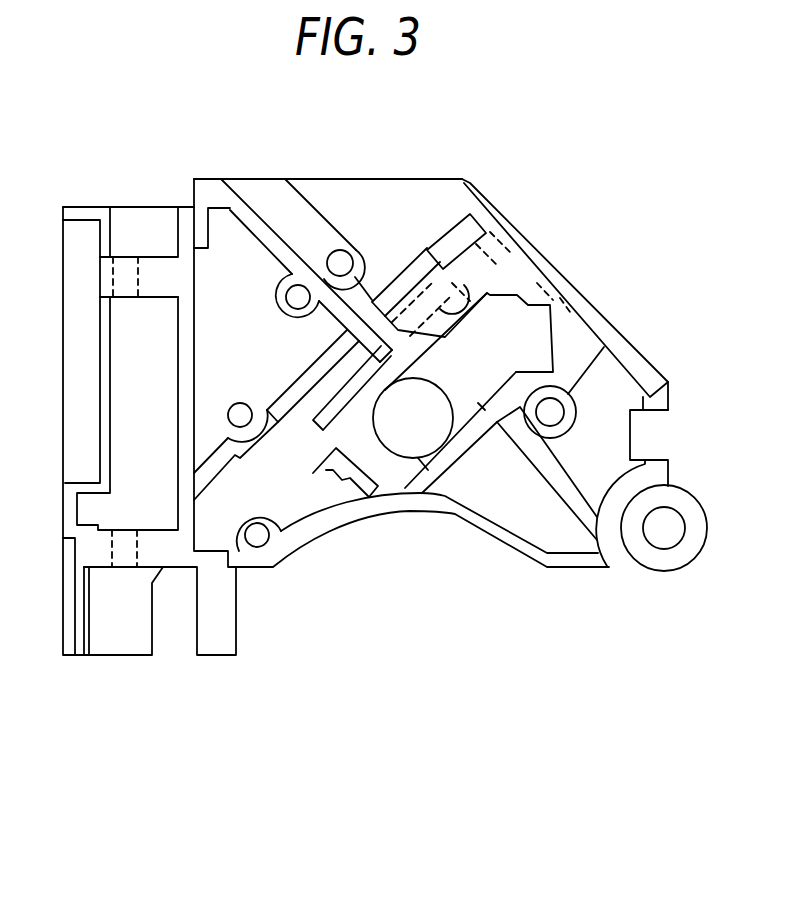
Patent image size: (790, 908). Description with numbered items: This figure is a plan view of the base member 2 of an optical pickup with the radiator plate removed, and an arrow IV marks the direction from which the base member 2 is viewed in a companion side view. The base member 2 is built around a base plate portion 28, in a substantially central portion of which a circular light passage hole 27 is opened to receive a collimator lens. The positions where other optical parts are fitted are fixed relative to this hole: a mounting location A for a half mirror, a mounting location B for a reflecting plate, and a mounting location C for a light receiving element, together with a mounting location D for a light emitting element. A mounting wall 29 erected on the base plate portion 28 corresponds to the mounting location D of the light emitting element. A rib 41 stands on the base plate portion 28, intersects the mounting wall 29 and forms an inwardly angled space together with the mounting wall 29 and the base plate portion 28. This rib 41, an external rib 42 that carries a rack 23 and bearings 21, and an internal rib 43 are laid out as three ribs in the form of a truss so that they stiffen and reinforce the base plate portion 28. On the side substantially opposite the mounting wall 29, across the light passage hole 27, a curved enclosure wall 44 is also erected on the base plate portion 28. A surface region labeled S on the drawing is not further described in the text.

The base member 2 is at (537, 199).
The bearings 21 is at (156, 265).
The rack 23 is at (62, 360).
The light passage hole 27 is at (436, 392).
The base plate portion 28 is at (378, 178).
The mounting wall 29 is at (390, 308).
The rib 41 is at (263, 250).
The external rib 42 is at (198, 341).
The internal rib 43 is at (301, 384).
The curved enclosure wall 44 is at (338, 522).
The surface S is at (340, 200).
The mounting location of light emitting element D is at (438, 272).
The mounting location of half mirror A is at (530, 297).
The mounting location of reflecting plate B is at (356, 432).
The mounting location of light receiving element C is at (565, 292).
The arrow IV is at (410, 628).